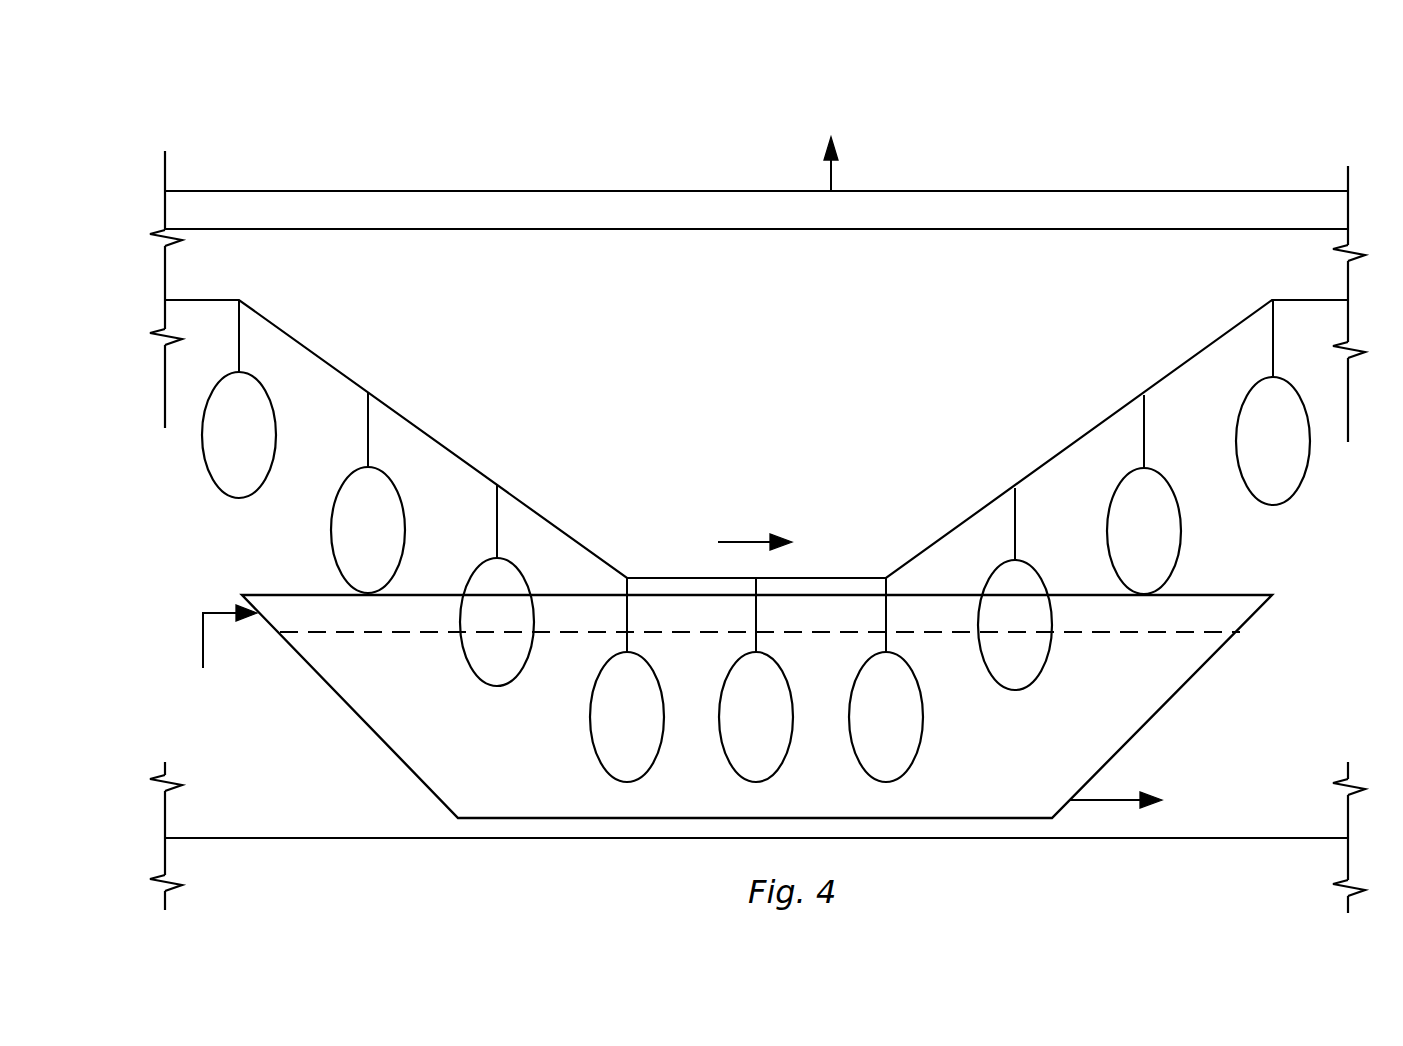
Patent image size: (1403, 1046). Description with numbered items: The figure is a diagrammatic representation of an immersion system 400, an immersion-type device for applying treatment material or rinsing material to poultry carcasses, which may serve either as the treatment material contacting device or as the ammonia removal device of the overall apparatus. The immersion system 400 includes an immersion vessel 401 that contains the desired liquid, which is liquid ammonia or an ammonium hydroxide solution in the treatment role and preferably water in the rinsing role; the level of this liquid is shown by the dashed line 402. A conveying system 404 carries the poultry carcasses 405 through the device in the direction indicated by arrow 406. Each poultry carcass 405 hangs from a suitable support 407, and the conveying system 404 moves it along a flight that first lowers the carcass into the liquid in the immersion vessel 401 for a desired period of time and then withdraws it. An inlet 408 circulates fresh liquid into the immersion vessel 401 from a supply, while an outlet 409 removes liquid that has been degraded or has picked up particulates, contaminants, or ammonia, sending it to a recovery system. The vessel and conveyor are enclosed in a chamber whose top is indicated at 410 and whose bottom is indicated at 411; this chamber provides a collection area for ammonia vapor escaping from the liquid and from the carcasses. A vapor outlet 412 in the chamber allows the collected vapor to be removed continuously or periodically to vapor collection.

The immersion system 400 is at (1145, 137).
The immersion vessel 401 is at (1228, 643).
The dashed line 402 is at (1199, 632).
The conveying system 404 is at (737, 361).
The poultry carcasses 405 is at (219, 448).
The arrow 406 is at (727, 534).
The support 407 is at (239, 353).
The inlet 408 is at (203, 630).
The outlet 409 is at (1105, 798).
The top of the chamber 410 is at (978, 191).
The bottom of the chamber 411 is at (1058, 840).
The vapor outlet 412 is at (829, 175).